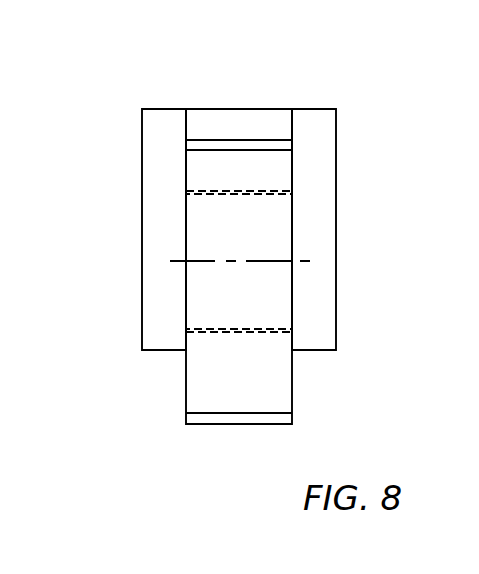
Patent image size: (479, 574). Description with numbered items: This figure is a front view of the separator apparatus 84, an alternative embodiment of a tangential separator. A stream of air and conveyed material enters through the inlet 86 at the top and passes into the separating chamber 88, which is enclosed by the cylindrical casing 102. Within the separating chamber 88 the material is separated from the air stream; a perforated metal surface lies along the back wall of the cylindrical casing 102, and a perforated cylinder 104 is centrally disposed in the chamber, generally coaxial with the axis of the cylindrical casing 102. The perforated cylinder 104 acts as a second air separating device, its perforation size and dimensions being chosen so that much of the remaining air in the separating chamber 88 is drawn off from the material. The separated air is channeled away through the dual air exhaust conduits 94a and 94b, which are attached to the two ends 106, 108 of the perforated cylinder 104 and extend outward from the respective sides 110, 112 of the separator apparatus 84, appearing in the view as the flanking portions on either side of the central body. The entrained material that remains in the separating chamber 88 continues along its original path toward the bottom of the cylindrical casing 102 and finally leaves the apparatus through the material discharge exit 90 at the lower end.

The separator apparatus 84 is at (258, 72).
The inlet 86 is at (245, 125).
The separating chamber 88 is at (268, 172).
The material discharge exit 90 is at (234, 413).
The air exhaust conduit 94a is at (153, 162).
The air exhaust conduit 94b is at (323, 228).
The cylindrical casing 102 is at (272, 390).
The perforated cylinder 104 is at (218, 332).
The end of perforated cylinder 106 is at (184, 293).
The end of perforated cylinder 108 is at (292, 303).
The side of separator apparatus 110 is at (184, 398).
The side of separator apparatus 112 is at (292, 369).